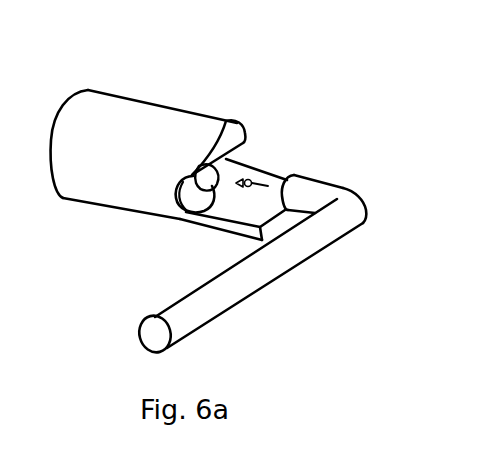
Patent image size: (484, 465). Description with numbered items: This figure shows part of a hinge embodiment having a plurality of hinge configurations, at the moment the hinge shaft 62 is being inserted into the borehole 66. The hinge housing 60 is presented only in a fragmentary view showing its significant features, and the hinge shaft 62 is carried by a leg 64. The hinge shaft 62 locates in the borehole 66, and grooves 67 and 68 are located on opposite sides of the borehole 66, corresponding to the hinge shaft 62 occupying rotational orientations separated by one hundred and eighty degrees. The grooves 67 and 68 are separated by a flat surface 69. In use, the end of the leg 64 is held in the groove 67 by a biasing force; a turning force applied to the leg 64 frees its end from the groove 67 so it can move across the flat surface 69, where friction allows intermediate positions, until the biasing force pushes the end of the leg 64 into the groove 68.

The hinge housing 60 is at (118, 97).
The hinge shaft 62 is at (330, 181).
The leg 64 is at (238, 304).
The borehole 66 is at (188, 216).
The groove 67 is at (152, 216).
The groove 68 is at (243, 168).
The flat surface 69 is at (238, 122).